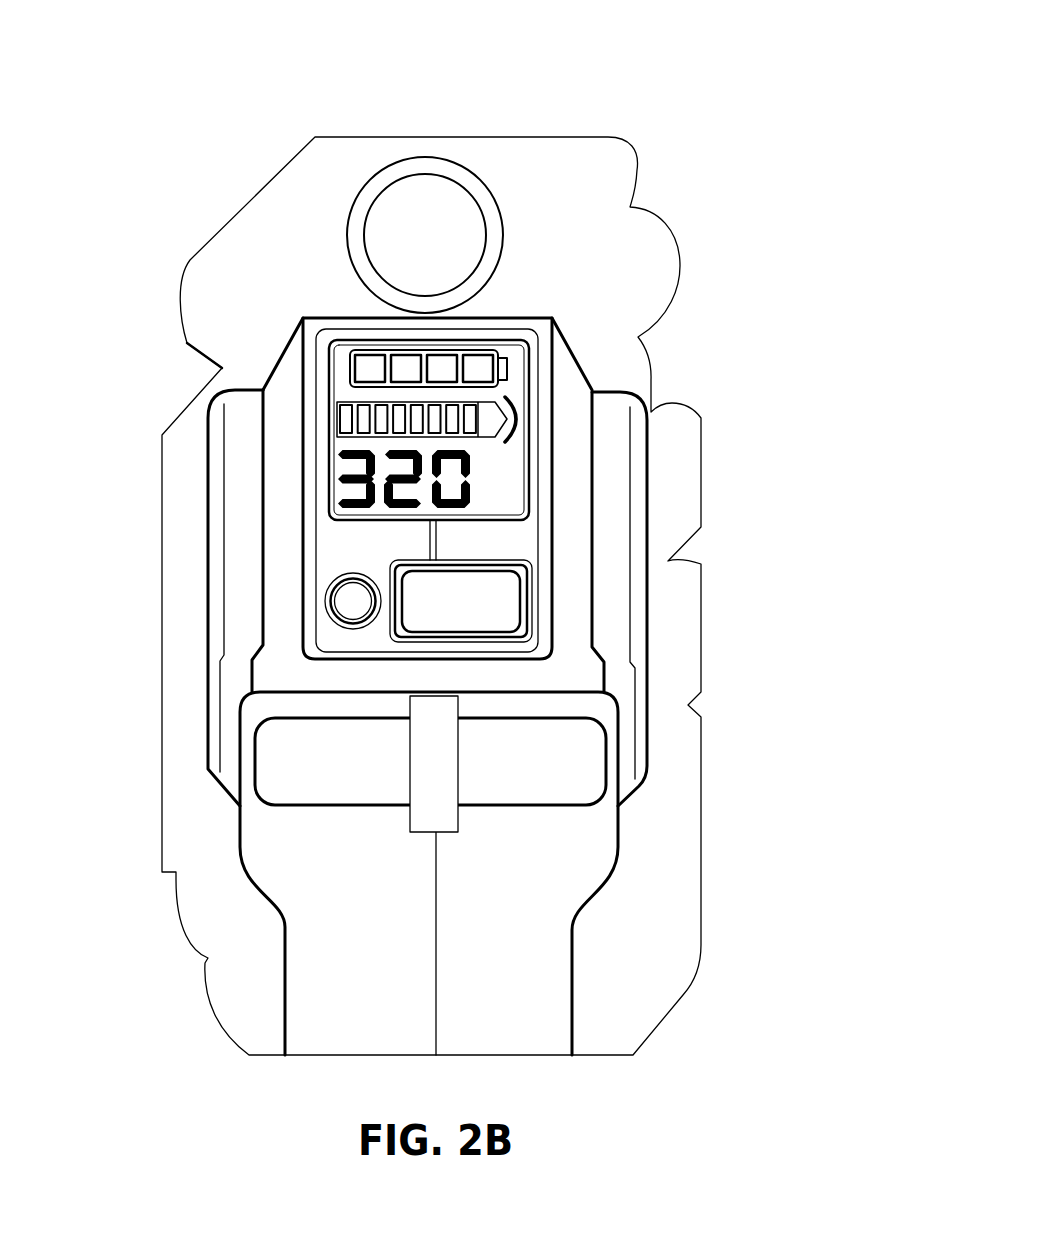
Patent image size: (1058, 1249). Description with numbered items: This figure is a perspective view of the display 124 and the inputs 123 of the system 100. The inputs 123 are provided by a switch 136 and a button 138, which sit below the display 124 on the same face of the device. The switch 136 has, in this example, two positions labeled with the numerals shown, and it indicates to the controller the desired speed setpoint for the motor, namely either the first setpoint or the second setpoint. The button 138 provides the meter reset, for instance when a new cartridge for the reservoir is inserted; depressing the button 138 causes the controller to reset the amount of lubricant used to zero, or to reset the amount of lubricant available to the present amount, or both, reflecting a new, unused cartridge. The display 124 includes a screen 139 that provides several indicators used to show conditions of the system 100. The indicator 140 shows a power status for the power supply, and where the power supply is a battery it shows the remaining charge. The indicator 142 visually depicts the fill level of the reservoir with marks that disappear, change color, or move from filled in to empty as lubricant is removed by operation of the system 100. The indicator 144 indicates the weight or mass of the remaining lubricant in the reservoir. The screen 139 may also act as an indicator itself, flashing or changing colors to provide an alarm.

The system 100 is at (632, 52).
The inputs 123 is at (453, 673).
The display 124 is at (538, 388).
The switch 136 is at (481, 617).
The button 138 is at (326, 598).
The screen 139 is at (510, 498).
The indicator 140 is at (370, 353).
The indicator 142 is at (340, 412).
The indicator 144 is at (337, 473).